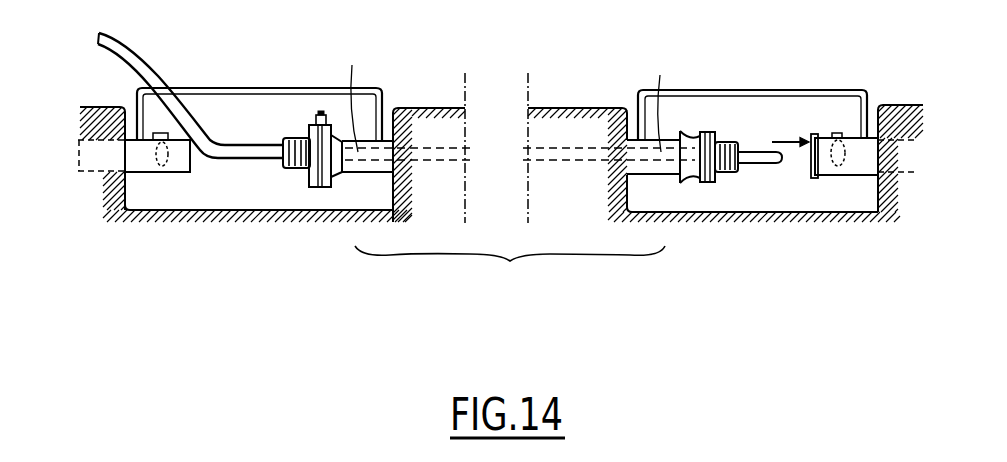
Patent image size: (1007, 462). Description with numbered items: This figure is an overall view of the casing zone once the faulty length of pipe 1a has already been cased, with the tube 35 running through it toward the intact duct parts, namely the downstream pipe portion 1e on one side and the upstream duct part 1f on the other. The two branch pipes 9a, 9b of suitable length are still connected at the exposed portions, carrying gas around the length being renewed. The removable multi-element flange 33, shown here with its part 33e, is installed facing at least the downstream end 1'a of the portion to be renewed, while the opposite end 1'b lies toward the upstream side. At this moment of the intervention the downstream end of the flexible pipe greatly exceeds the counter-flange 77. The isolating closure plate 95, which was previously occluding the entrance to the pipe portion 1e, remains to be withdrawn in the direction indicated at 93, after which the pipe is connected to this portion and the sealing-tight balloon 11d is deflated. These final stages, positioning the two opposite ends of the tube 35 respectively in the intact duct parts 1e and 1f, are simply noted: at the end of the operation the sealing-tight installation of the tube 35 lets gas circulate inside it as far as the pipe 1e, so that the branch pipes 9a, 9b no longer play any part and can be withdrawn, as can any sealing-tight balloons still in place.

The length of pipe to be renewed 1a is at (500, 189).
The branch pipe 9a is at (233, 87).
The branch pipe 9b is at (738, 88).
The opening in wall (left) 1'b is at (361, 95).
The downstream end of the pipe length to be renewed 1'a is at (657, 96).
The intact duct part on the upstream side 1f is at (140, 165).
The intact duct part on the downstream side 1e is at (860, 163).
The tube 35 is at (236, 160).
The counter-flange 77 is at (283, 142).
The removable multi-element flange 33 is at (723, 185).
The plug pin 33e is at (740, 180).
The insertion direction arrow 93 is at (800, 134).
The isolating closure plate 95 is at (822, 132).
The inflatable sealing-tight balloon 11d is at (836, 177).